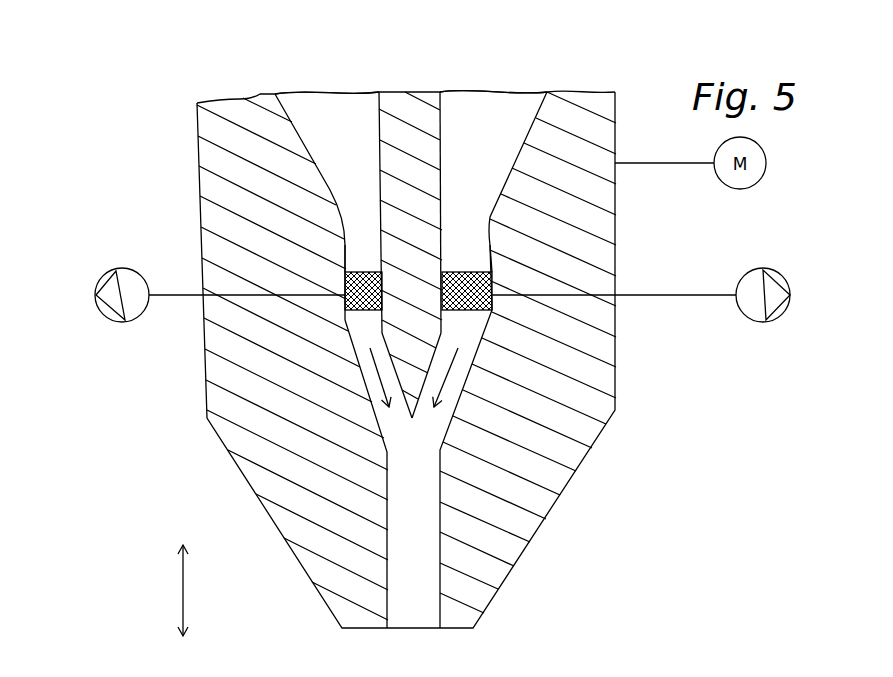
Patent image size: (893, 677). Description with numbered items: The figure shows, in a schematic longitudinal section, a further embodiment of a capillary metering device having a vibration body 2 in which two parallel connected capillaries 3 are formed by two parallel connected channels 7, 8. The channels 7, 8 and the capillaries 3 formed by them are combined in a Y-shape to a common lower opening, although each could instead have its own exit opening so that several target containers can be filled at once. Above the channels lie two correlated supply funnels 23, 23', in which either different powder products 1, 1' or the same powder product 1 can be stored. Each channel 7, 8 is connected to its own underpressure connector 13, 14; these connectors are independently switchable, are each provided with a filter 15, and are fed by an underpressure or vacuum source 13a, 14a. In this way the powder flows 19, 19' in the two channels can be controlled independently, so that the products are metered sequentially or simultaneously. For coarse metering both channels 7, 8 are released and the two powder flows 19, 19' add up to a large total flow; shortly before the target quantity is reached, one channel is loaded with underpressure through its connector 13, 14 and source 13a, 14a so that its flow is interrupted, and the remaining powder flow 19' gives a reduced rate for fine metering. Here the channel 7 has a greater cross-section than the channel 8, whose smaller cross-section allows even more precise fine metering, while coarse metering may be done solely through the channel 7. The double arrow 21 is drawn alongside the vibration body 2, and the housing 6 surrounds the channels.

The powder product 1 is at (493, 212).
The powder product 1' is at (328, 212).
The vibration body 2 is at (556, 514).
The capillary 3 is at (362, 333).
The housing 6 is at (606, 323).
The channel 7 is at (470, 243).
The channel 8 is at (362, 243).
The underpressure connector 13 is at (341, 304).
The underpressure or vacuum source 13a is at (100, 320).
The underpressure connector 14 is at (497, 304).
The underpressure or vacuum source 14a is at (785, 320).
The filter 15 is at (343, 284).
The powder flow 19 is at (522, 406).
The powder flow 19' is at (317, 286).
The direction of movement 21 is at (182, 595).
The supply funnel 23 is at (493, 69).
The supply funnel 23' is at (327, 73).